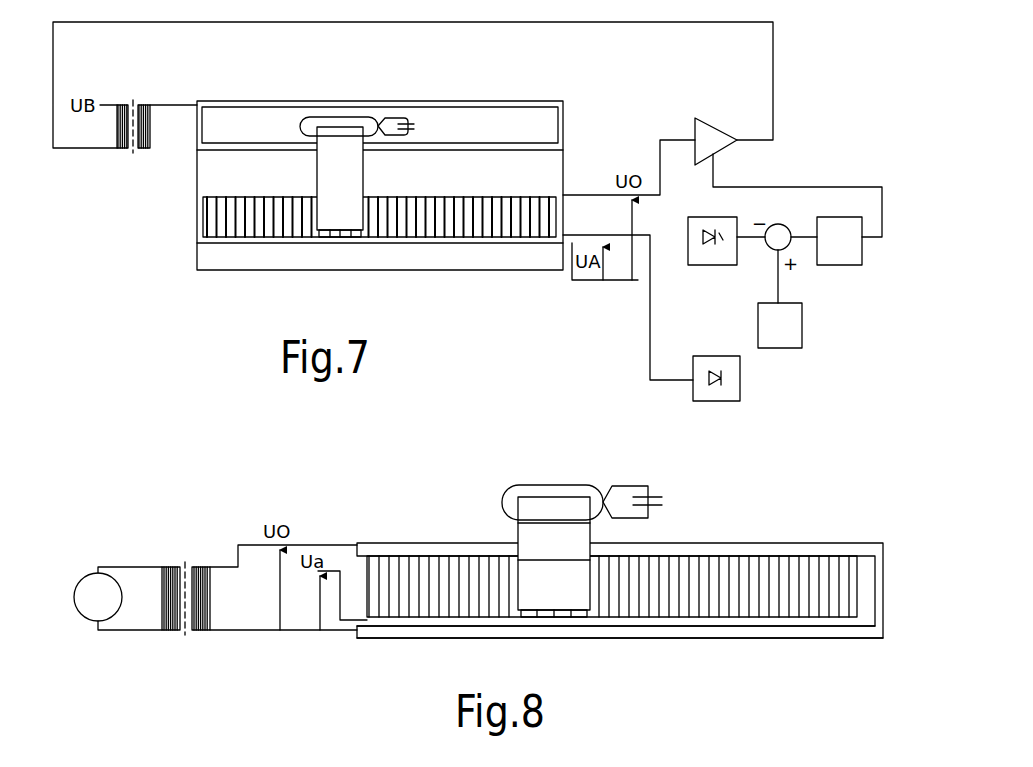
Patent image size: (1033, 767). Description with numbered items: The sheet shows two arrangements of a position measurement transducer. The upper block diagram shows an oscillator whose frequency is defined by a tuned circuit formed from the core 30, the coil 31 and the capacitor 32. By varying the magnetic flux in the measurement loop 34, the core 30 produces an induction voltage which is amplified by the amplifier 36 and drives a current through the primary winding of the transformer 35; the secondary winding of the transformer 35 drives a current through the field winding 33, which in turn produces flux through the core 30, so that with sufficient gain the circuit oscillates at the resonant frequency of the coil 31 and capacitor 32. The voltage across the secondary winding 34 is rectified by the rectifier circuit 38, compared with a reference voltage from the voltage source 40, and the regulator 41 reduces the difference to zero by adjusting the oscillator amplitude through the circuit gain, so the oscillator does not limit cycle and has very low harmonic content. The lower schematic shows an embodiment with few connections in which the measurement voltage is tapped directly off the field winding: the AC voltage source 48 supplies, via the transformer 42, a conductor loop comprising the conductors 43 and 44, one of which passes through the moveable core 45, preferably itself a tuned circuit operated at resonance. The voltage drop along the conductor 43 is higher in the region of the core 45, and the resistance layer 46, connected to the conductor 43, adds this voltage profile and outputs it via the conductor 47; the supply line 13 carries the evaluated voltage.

In FIG. 8, the measuring line 13 is at (262, 632).
In FIG. 7, the core 30 is at (352, 186).
In FIG. 7, the coil 31 is at (300, 125).
In FIG. 7, the capacitor 32 is at (410, 126).
In FIG. 7, the field winding 33 is at (222, 101).
In FIG. 7, the measurement loop 34 is at (385, 197).
In FIG. 7, the transformer 35 is at (143, 105).
In FIG. 7, the amplifier 36 is at (718, 142).
In FIG. 7, the rectifier circuit 38 is at (703, 258).
In FIG. 7, the voltage source 40 is at (800, 334).
In FIG. 7, the regulator 41 is at (845, 255).
In FIG. 8, the transformer 42 is at (172, 566).
In FIG. 8, the conductor 43 is at (386, 543).
In FIG. 8, the conductor 44 is at (430, 640).
In FIG. 8, the moveable core 45 is at (567, 598).
In FIG. 8, the resistance layer 46 is at (705, 585).
In FIG. 8, the conductor 47 is at (657, 618).
In FIG. 8, the AC voltage source 48 is at (88, 587).